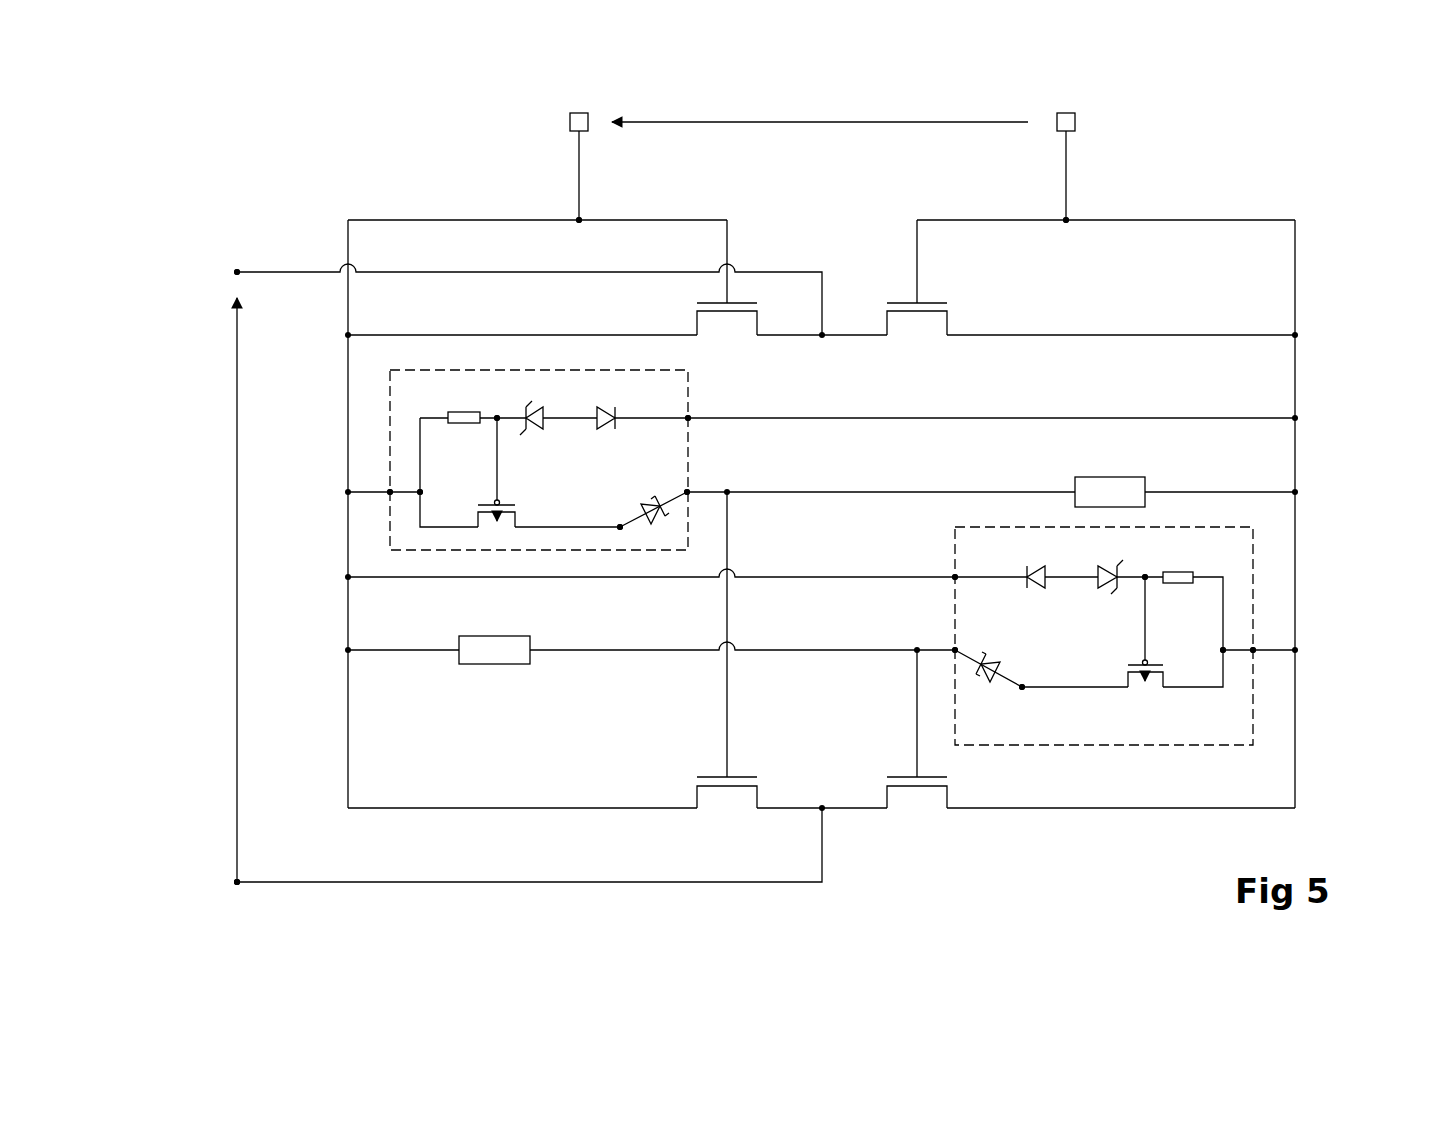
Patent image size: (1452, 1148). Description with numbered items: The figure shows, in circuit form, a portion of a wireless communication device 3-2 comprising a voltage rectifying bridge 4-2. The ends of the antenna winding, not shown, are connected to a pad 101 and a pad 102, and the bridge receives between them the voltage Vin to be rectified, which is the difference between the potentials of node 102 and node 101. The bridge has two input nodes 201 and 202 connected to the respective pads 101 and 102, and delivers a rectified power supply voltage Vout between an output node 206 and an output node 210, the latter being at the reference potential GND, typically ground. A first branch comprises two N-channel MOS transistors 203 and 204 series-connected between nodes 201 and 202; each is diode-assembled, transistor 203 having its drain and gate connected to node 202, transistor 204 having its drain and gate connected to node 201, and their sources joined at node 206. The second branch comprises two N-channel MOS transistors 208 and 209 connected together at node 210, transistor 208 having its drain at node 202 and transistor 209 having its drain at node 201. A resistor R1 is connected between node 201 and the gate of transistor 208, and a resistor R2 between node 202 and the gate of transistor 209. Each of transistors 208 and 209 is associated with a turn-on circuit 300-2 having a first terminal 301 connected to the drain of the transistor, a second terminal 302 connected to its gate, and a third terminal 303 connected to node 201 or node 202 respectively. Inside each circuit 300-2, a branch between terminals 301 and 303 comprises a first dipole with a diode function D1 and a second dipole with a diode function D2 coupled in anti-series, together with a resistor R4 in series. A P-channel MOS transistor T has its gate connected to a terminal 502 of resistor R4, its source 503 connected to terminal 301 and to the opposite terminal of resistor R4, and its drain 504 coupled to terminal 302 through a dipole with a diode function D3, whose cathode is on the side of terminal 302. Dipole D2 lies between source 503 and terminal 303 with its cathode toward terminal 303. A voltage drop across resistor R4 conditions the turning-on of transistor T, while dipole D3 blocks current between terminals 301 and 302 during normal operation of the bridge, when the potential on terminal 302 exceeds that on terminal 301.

The pad 101 is at (1068, 112).
The pad 102 is at (575, 112).
The node 201 is at (1069, 219).
The node 202 is at (582, 219).
The N-channel MOS transistor 203 is at (733, 340).
The N-channel MOS transistor 204 is at (920, 340).
The output node 206 is at (239, 270).
The N-channel MOS transistor 208 is at (725, 812).
The N-channel MOS transistor 209 is at (919, 812).
The output node 210 is at (239, 886).
The turn-on circuit 300-2 is at (562, 370).
The first terminal 301 is at (390, 490).
The second terminal 302 is at (690, 491).
The third terminal 303 is at (690, 416).
The terminal of resistor R4 502 is at (497, 415).
The conduction terminal 503 is at (418, 494).
The conduction terminal 504 is at (620, 525).
The device 3-2 is at (1278, 110).
The rectifying bridge 4-2 is at (1328, 380).
The resistor R1 is at (1110, 476).
The resistor R2 is at (495, 665).
The resistor R4 is at (820, 511).
The first dipole with a diode function D1 is at (536, 431).
The second dipole with a diode function D2 is at (610, 431).
The dipole with a diode function D3 is at (655, 500).
The transistor T is at (522, 513).
The voltage to be rectified Vin is at (828, 121).
The rectified power supply voltage Vout is at (236, 440).
The reference potential GND is at (207, 882).